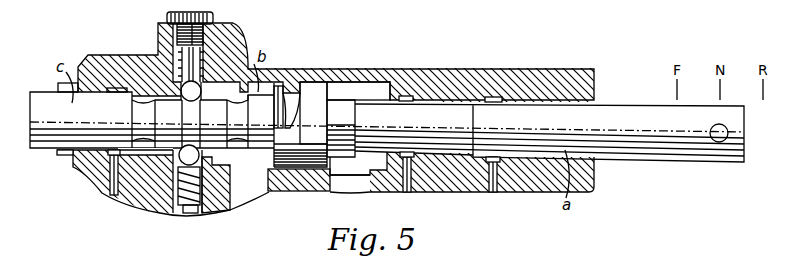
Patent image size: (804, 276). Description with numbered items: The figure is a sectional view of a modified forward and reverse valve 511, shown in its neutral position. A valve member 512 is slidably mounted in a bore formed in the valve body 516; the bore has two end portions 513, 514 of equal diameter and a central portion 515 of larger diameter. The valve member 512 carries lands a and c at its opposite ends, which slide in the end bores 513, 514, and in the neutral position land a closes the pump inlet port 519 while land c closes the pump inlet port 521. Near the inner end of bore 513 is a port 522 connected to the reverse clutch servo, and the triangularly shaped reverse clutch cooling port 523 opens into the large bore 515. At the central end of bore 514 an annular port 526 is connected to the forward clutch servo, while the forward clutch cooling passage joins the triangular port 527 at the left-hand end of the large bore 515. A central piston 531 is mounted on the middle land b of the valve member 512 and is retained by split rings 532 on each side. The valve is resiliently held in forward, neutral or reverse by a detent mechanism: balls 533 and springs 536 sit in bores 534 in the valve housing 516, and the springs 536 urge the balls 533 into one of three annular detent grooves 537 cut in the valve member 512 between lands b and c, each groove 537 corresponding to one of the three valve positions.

The forward and reverse valve 511 is at (398, 121).
The valve member 512 is at (617, 150).
The bore end portion 513 is at (445, 100).
The bore end portion 514 is at (146, 67).
The central bore portion 515 is at (340, 83).
The valve body 516 is at (393, 68).
The pump inlet port 519 is at (498, 193).
The pump inlet port 521 is at (112, 166).
The reverse clutch servo port 522 is at (415, 192).
The reverse clutch cooling port 523 is at (353, 192).
The annular port 526 is at (171, 204).
The forward clutch cooling port 527 is at (244, 188).
The central piston 531 is at (317, 83).
The split rings 532 is at (289, 113).
The detent balls 533 is at (187, 207).
The detent bores 534 is at (201, 212).
The detent spring 536 is at (188, 214).
The annular detent grooves 537 is at (179, 162).